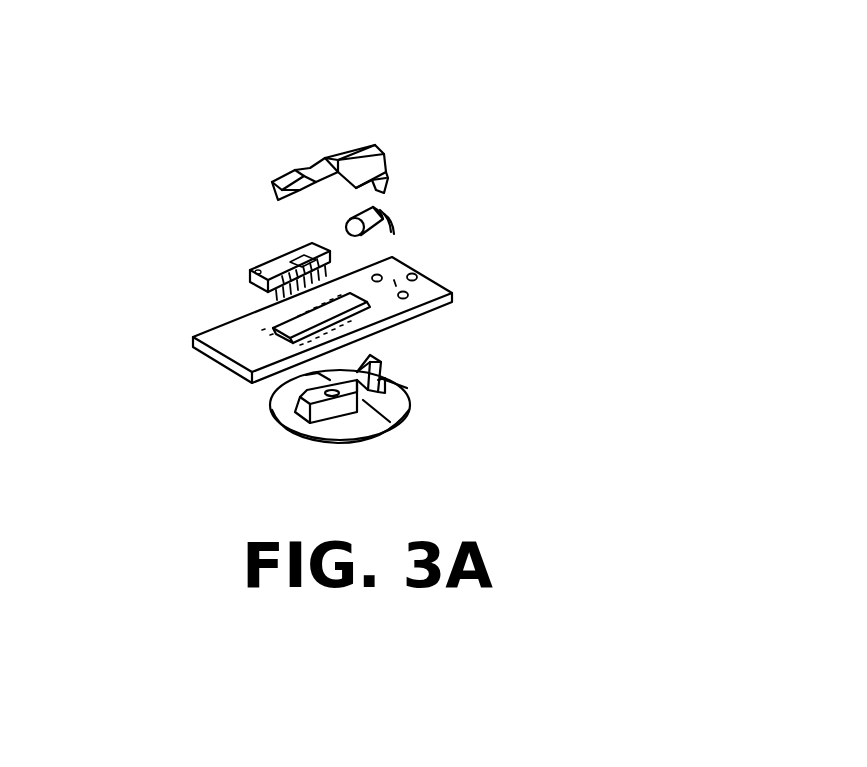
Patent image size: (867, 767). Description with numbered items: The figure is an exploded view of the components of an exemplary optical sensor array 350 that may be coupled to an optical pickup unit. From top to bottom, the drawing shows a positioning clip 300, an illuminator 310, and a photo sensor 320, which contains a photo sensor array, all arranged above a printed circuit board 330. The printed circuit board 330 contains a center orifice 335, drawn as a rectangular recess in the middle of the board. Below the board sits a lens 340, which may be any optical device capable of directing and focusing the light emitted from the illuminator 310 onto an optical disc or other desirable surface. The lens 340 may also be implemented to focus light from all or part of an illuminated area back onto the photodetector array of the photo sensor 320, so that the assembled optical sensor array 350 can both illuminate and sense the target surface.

The optical sensor array 350 is at (398, 81).
The positioning clip 300 is at (392, 152).
The illuminator 310 is at (399, 220).
The photo sensor 320 is at (342, 253).
The printed circuit board 330 is at (447, 316).
The center orifice 335 is at (317, 322).
The lens 340 is at (420, 386).